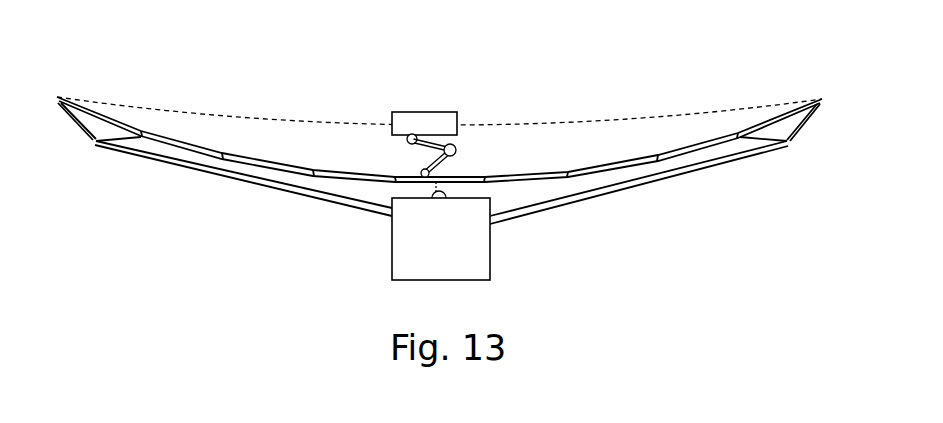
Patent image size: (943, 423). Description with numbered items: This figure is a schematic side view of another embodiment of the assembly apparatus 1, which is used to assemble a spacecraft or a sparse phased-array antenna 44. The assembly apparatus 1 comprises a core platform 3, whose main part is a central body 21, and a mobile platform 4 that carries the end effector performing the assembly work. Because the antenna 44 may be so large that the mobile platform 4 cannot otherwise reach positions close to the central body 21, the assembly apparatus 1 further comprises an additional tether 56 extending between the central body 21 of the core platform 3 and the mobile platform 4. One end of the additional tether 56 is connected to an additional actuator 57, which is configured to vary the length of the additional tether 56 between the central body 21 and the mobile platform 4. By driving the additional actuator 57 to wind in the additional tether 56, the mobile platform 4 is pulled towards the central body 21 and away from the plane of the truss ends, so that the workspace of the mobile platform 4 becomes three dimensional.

The assembly apparatus 1 is at (439, 124).
The core platform 3 is at (477, 258).
The mobile platform 4 is at (436, 121).
The central body 21 is at (475, 262).
The sparse phased-array antenna 44 is at (676, 160).
The additional tether 56 is at (428, 157).
The additional actuator 57 is at (458, 140).